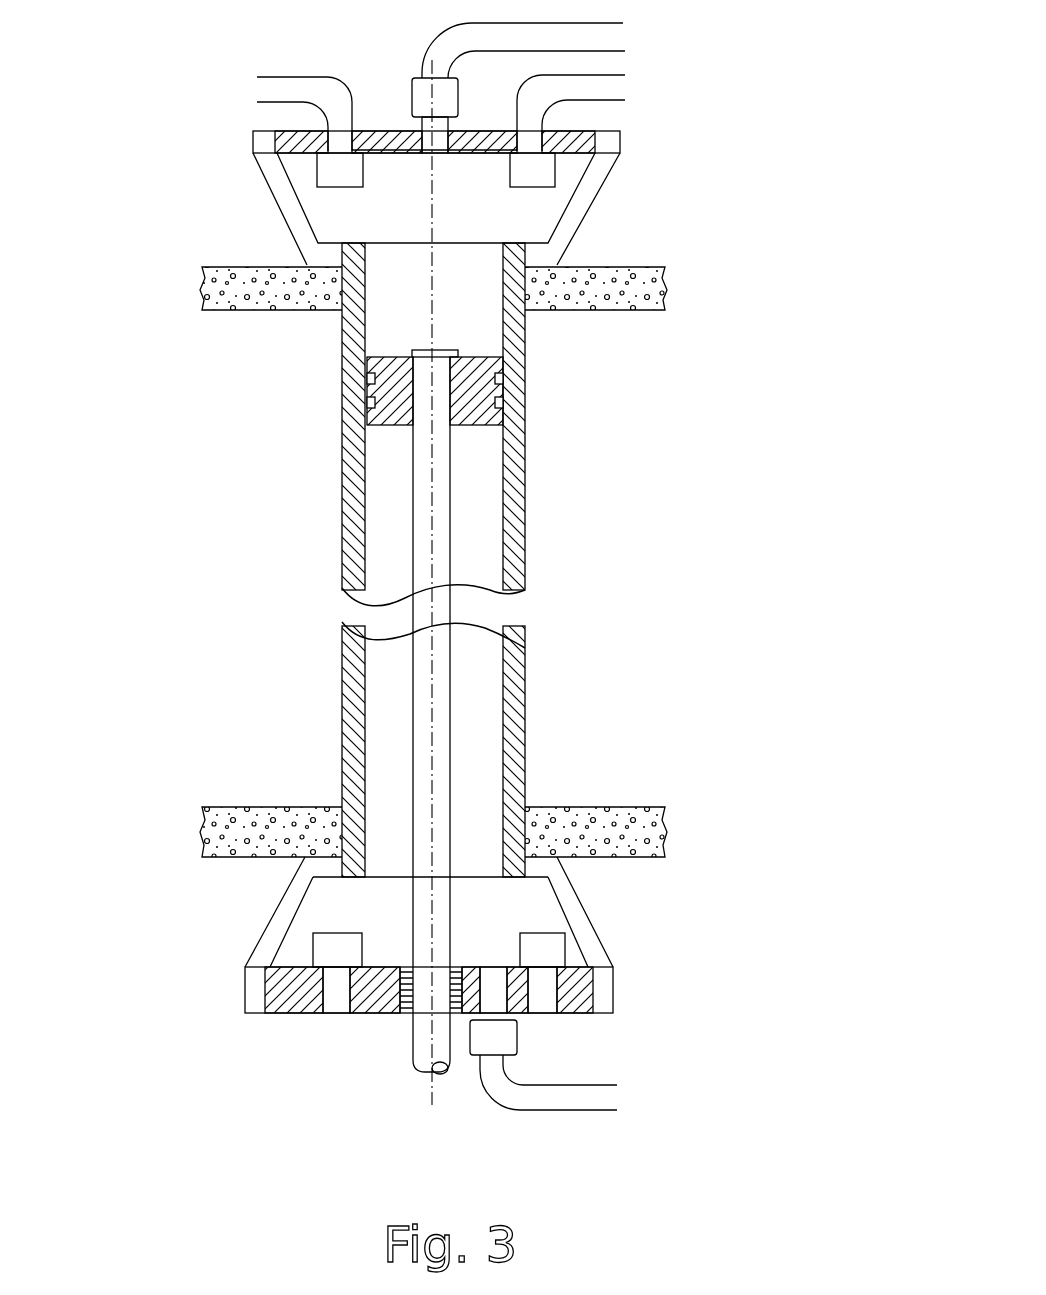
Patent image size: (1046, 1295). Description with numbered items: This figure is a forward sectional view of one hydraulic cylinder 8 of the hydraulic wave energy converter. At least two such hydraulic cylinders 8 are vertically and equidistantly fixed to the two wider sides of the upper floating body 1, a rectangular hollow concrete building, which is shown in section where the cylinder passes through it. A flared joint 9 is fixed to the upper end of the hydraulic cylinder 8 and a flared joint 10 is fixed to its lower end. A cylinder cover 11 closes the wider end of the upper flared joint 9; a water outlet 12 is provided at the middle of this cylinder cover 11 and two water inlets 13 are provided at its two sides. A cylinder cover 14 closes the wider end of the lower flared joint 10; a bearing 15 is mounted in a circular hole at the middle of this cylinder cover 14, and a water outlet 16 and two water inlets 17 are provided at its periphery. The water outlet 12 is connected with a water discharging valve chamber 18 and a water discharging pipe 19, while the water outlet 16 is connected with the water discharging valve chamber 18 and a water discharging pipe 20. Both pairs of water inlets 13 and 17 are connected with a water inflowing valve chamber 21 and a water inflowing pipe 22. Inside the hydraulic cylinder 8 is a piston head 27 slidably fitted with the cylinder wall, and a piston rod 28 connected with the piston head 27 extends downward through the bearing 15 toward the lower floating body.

The upper floating body 1 is at (235, 265).
The hydraulic cylinder 8 is at (342, 545).
The flared joint 9 is at (282, 212).
The flared joint 10 is at (272, 918).
The cylinder cover 11 is at (352, 142).
The water outlet 12 is at (470, 150).
The water inlet 13 is at (510, 172).
The cylinder cover 14 is at (290, 1013).
The bearing 15 is at (405, 1013).
The water outlet 16 is at (490, 1003).
The water inlet 17 is at (337, 993).
The water discharging valve chamber 18 is at (458, 84).
The water discharging pipe 19 is at (500, 52).
The water discharging pipe 20 is at (587, 1083).
The water inflowing valve chamber 21 is at (318, 181).
The water inflowing pipe 22 is at (352, 78).
The piston head 27 is at (343, 348).
The piston rod 28 is at (417, 485).